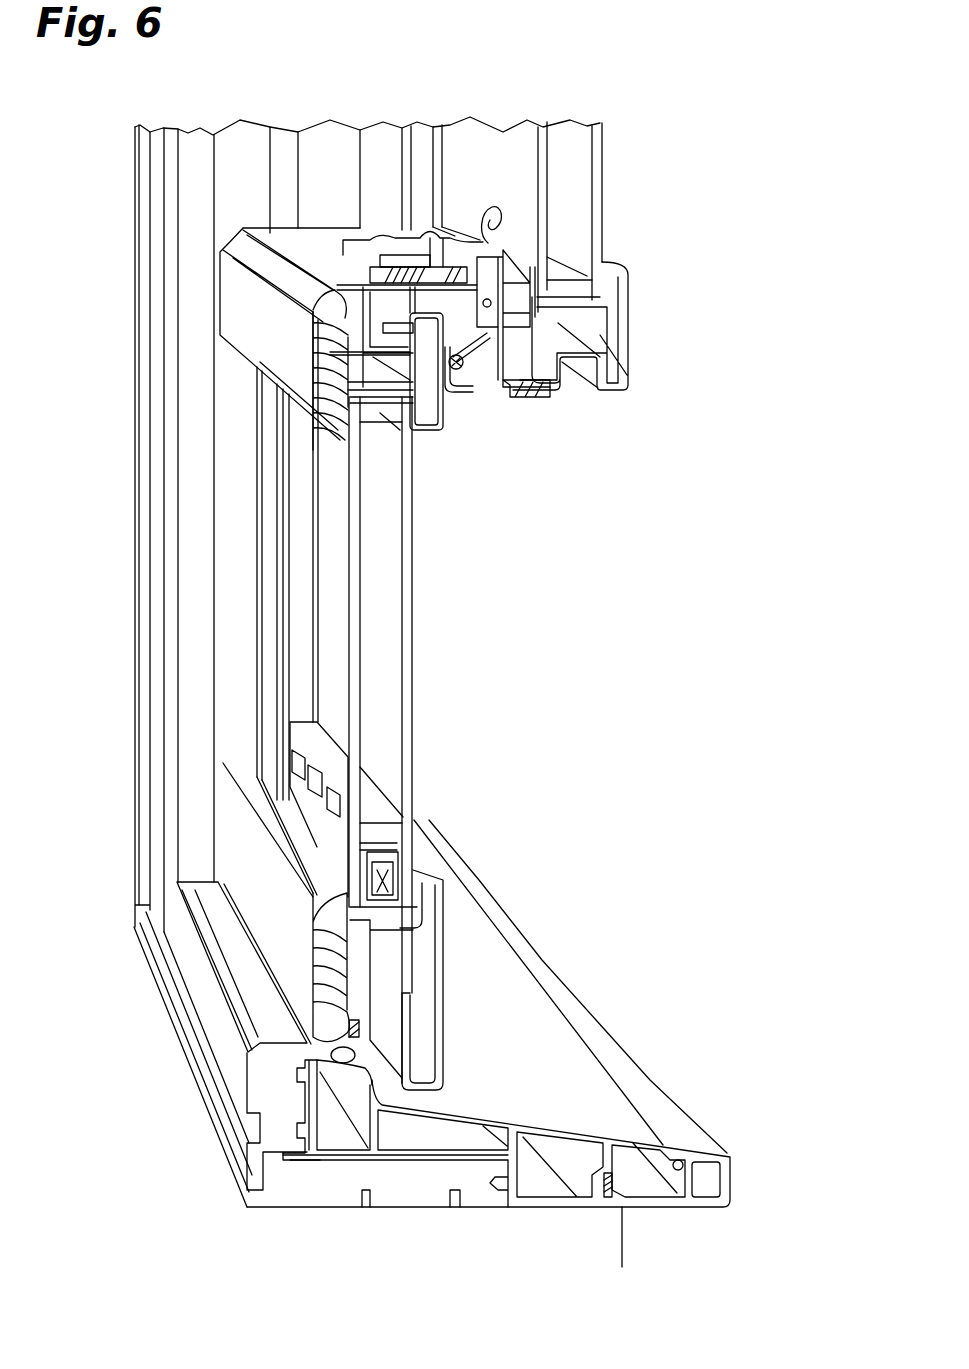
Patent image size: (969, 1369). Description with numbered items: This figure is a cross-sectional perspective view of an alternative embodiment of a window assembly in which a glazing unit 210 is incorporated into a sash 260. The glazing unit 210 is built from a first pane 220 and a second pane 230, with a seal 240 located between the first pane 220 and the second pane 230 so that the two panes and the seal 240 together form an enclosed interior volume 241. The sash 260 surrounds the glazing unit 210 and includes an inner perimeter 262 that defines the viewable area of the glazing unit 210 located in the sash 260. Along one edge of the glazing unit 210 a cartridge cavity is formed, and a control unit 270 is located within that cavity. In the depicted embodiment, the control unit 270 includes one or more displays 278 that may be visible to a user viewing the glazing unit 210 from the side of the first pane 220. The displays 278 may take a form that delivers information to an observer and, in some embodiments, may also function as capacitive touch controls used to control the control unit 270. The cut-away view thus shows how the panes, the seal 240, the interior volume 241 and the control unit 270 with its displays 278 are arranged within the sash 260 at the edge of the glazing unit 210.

The glazing unit 210 is at (430, 615).
The first pane 220 is at (347, 542).
The second pane 230 is at (407, 549).
The seal 240 is at (383, 413).
The enclosed interior volume 241 is at (385, 630).
The sash 260 is at (443, 970).
The inner perimeter 262 is at (340, 873).
The control unit 270 is at (400, 858).
The displays 278 is at (327, 803).